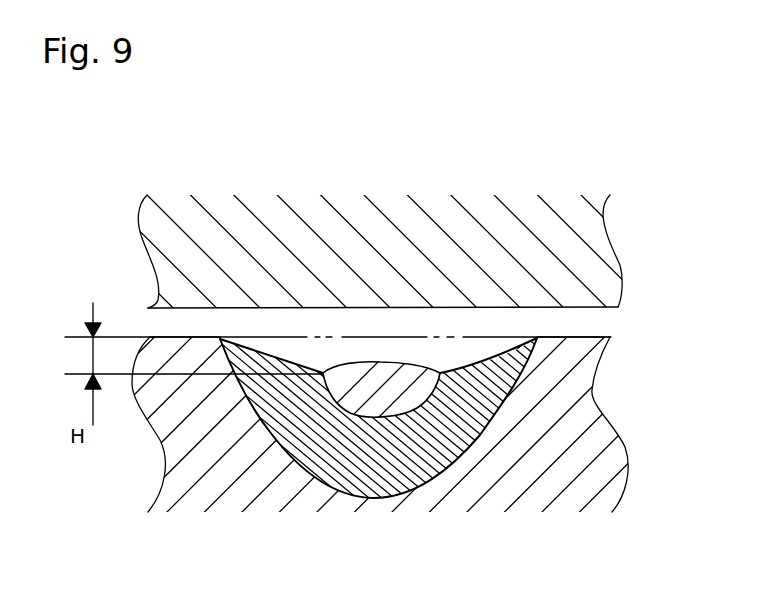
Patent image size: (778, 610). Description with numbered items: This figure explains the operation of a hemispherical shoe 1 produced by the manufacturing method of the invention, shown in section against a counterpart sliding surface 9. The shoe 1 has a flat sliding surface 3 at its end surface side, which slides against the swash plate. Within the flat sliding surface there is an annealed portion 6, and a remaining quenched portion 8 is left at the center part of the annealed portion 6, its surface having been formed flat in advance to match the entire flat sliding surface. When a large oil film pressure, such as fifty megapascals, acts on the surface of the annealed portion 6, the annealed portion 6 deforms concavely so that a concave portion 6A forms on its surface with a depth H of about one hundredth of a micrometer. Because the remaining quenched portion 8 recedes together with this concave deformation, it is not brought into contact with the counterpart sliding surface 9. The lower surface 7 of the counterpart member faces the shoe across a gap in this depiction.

The hemispherical shoe 1 is at (603, 401).
The flat sliding surface 3 is at (165, 337).
The annealed portion 6 is at (407, 462).
The concave portion 6A is at (273, 360).
The lower surface of upper member 7 is at (586, 307).
The remaining quenched portion 8 is at (390, 362).
The counterpart sliding surface 9 is at (586, 308).